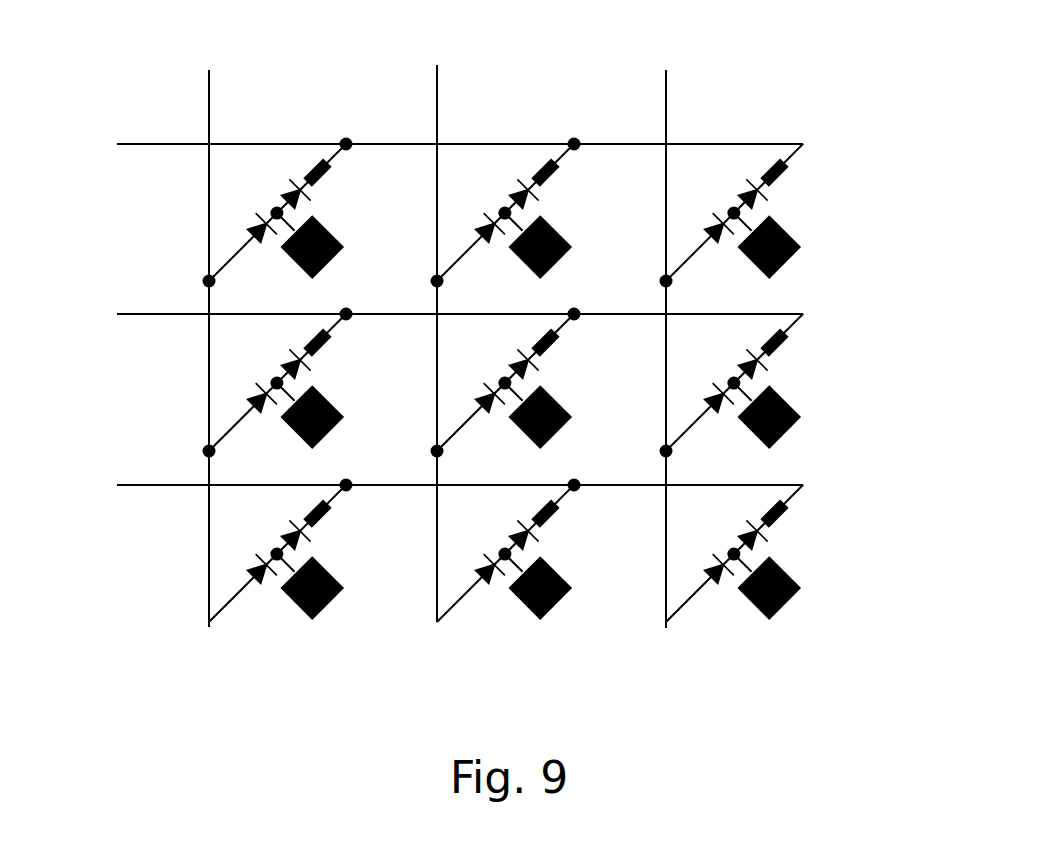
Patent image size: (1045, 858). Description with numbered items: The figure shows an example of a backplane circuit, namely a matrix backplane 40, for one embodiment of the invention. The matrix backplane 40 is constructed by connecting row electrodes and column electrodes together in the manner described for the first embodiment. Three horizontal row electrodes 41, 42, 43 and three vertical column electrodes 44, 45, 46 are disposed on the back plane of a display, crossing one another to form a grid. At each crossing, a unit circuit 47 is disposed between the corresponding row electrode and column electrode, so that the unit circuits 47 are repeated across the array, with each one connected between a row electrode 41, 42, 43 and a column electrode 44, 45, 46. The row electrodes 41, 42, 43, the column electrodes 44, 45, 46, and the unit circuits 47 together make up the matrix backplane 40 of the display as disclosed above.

The matrix backplane 40 is at (485, 320).
The row electrode 41 is at (421, 142).
The row electrode 42 is at (421, 314).
The row electrode 43 is at (421, 485).
The column electrode 44 is at (206, 325).
The column electrode 45 is at (434, 323).
The column electrode 46 is at (674, 326).
The unit circuit 47 is at (820, 558).